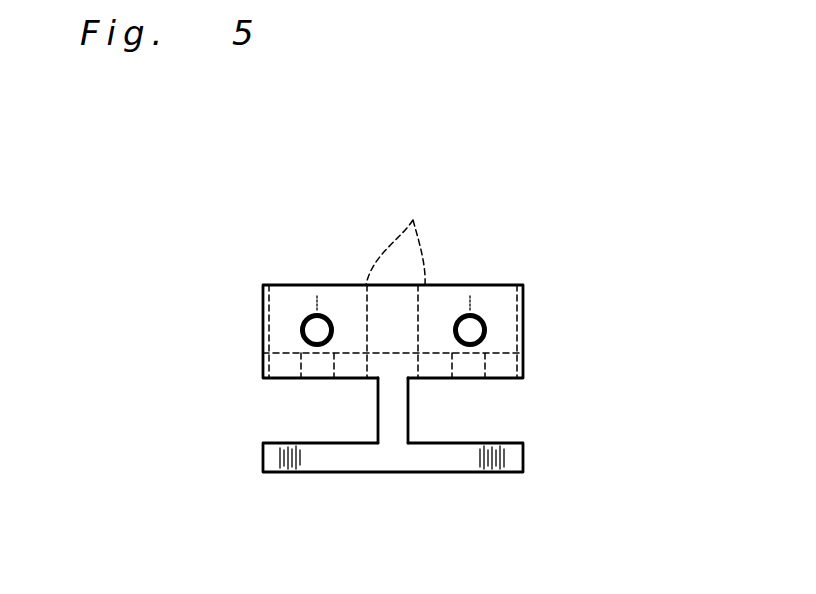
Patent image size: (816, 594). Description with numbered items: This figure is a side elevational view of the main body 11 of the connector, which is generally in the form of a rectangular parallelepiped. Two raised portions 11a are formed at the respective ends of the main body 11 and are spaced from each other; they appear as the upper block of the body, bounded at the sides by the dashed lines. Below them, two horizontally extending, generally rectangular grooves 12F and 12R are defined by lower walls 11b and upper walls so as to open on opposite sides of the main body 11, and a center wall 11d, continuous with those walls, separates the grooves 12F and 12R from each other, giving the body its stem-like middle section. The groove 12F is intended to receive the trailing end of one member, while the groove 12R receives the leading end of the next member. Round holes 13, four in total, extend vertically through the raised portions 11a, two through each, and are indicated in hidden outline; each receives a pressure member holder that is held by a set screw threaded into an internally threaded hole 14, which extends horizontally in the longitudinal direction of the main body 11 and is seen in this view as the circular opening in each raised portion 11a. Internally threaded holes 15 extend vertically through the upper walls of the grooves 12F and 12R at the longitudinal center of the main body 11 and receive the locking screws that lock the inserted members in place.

The main body 11 is at (478, 285).
The raised portions 11a is at (265, 312).
The lower walls 11b is at (262, 458).
The center wall 11d is at (388, 430).
The rectangular groove 12R is at (297, 445).
The rectangular groove 12F is at (482, 443).
The round holes 13 is at (396, 284).
The internally threaded hole 14 is at (300, 331).
The internally threaded holes 15 is at (310, 368).